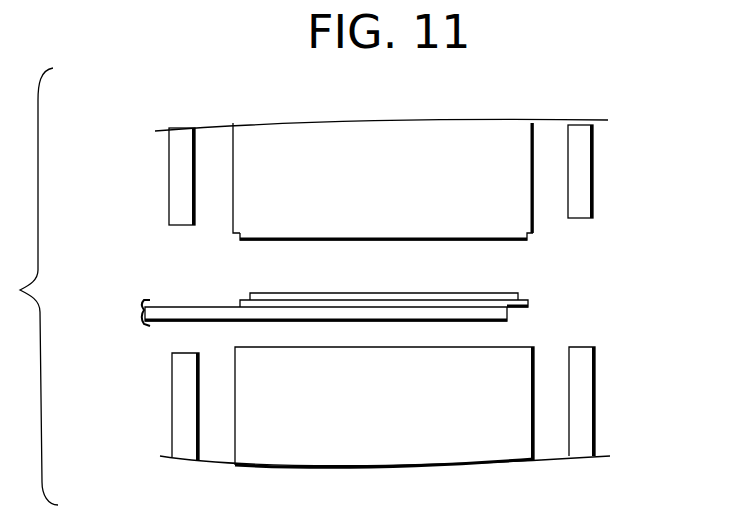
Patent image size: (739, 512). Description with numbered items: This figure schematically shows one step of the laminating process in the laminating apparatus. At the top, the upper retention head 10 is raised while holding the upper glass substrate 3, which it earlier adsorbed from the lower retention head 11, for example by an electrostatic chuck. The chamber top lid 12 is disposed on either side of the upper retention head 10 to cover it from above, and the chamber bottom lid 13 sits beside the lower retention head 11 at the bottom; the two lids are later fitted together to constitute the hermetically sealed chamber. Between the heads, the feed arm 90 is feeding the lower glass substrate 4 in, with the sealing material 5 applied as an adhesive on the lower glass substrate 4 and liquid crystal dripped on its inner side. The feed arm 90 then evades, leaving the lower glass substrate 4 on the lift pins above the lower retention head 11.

The upper retention head 10 is at (535, 145).
The lower retention head 11 is at (537, 433).
The chamber top lid 12 is at (170, 178).
The chamber bottom lid 13 is at (172, 420).
The upper glass substrate 3 is at (515, 240).
The lower glass substrate 4 is at (530, 298).
The sealing material 5 is at (262, 296).
The feed arm 90 is at (152, 326).